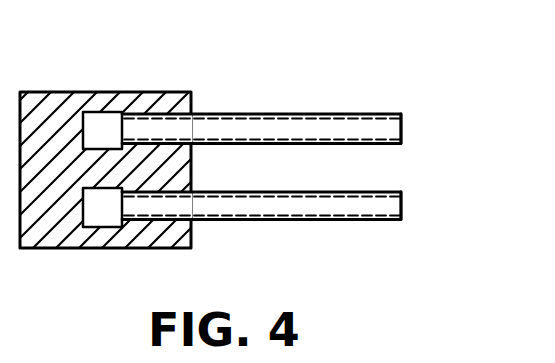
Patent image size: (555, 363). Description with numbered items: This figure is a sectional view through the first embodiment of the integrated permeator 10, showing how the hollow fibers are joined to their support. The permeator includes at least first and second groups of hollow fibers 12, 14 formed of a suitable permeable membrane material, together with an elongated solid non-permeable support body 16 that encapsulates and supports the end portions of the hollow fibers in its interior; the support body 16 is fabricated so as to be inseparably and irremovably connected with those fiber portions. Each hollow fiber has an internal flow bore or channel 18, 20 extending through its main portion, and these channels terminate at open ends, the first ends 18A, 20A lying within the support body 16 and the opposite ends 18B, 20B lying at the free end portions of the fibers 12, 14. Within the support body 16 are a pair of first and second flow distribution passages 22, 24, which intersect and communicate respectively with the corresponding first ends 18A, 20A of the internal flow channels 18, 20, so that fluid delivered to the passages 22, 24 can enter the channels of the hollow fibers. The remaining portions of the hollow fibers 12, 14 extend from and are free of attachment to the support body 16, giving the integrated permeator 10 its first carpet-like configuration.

The integrated permeator 10 is at (232, 43).
The first group of hollow fibers 12 is at (264, 224).
The second group of hollow fibers 14 is at (264, 99).
The solid non-permeable support body 16 is at (47, 91).
The internal flow channel 18 is at (242, 216).
The first end of internal flow channel 18A is at (133, 213).
The lower tube second end 18B is at (404, 216).
The internal flow channel 20 is at (248, 115).
The first end of internal flow channel 20A is at (139, 122).
The upper tube second end 20B is at (405, 121).
The first flow distribution passage 22 is at (94, 204).
The second flow distribution passage 24 is at (94, 137).